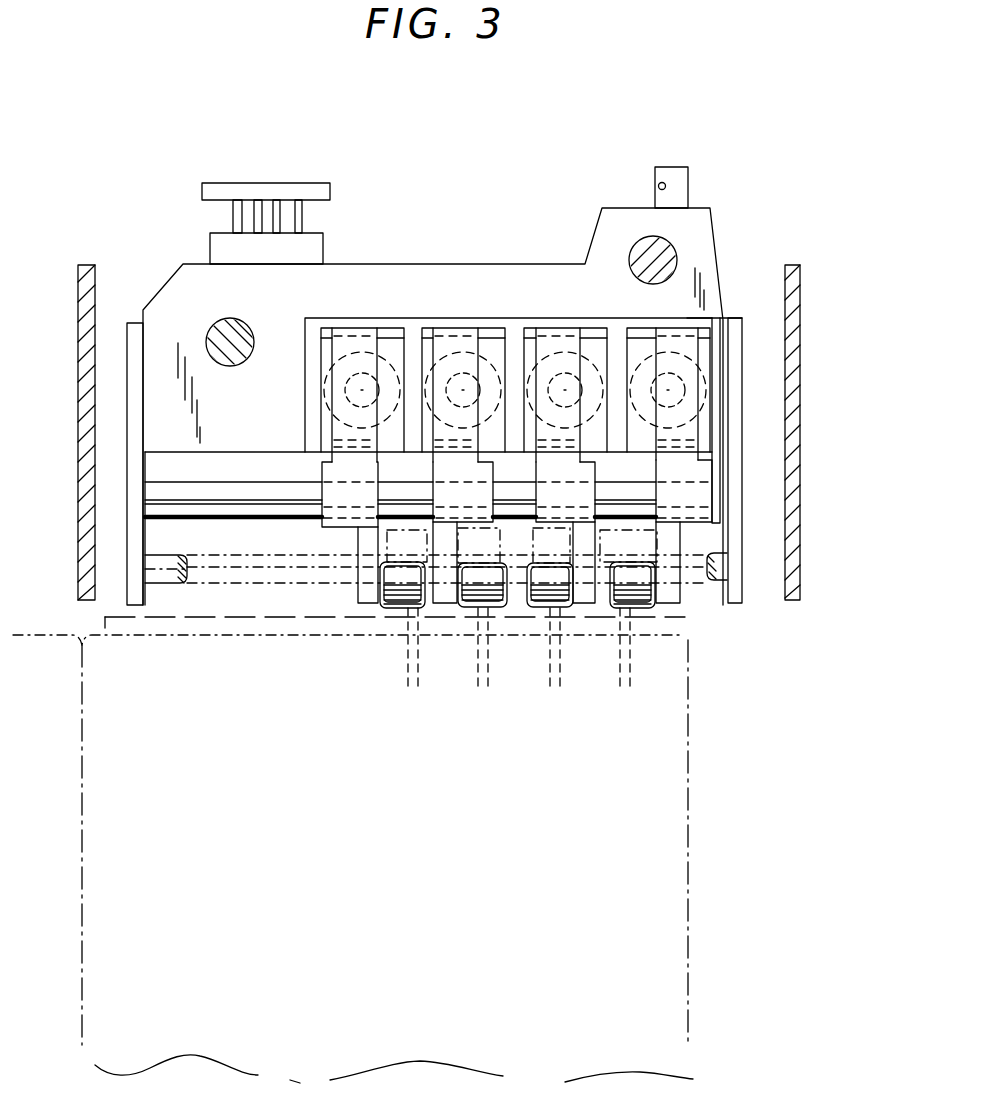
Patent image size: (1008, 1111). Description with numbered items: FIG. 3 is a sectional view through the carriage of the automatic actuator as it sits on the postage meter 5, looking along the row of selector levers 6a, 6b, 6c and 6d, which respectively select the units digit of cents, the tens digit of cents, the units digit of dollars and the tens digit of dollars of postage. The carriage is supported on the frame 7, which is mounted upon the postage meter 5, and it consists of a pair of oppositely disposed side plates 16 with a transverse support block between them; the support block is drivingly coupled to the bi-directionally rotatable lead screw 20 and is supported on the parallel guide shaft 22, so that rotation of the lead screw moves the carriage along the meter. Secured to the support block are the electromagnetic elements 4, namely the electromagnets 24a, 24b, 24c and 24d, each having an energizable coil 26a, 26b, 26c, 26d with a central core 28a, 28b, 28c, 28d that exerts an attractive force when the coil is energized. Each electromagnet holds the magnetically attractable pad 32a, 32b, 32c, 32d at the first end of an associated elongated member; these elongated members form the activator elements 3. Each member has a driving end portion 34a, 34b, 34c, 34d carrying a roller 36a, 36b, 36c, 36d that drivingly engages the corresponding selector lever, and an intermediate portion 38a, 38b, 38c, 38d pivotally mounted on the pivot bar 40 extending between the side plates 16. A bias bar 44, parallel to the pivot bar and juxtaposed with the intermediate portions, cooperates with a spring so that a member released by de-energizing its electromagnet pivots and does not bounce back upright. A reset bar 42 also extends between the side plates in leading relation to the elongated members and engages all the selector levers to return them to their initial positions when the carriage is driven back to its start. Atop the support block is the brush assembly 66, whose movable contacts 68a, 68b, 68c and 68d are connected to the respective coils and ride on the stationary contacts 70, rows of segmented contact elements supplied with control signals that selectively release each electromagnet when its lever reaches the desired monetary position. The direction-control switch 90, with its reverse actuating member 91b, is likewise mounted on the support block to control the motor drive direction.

The activator elements 3 is at (304, 458).
The electromagnetic elements 4 is at (376, 304).
The postage meter 5 is at (212, 677).
The selector lever 6a is at (628, 540).
The selector lever 6b is at (533, 546).
The selector lever 6c is at (482, 548).
The selector lever 6d is at (400, 542).
The frame 7 is at (68, 406).
The side plates 16 is at (135, 323).
The lead screw 20 is at (226, 330).
The guide shaft 22 is at (670, 244).
The electromagnet 24a is at (638, 330).
The electromagnet 24b is at (542, 332).
The electromagnet 24c is at (495, 330).
The electromagnet 24d is at (393, 330).
The electromagnet coil 26a is at (681, 340).
The electromagnet coil 26b is at (518, 353).
The electromagnet coil 26c is at (447, 362).
The electromagnet coil 26d is at (328, 352).
The central core 28a is at (714, 381).
The central core 28b is at (570, 366).
The central core 28c is at (463, 366).
The central core 28d is at (330, 404).
The magnetically attractable pad 32a is at (727, 341).
The magnetically attractable pad 32b is at (584, 390).
The magnetically attractable pad 32c is at (420, 370).
The magnetically attractable pad 32d is at (345, 387).
The driving end portion 34a is at (670, 599).
The driving end portion 34b is at (585, 598).
The driving end portion 34c is at (443, 599).
The driving end portion 34d is at (365, 599).
The roller 36a is at (624, 592).
The roller 36b is at (548, 592).
The roller 36c is at (468, 598).
The roller 36d is at (405, 593).
The intermediate portion 38a is at (678, 482).
The intermediate portion 38b is at (569, 482).
The intermediate portion 38c is at (458, 482).
The intermediate portion 38d is at (343, 483).
The pivot bar 40 is at (198, 498).
The reset bar 42 is at (160, 565).
The bias bar 44 is at (249, 513).
The brush assembly 66 is at (324, 245).
The movable contact 68a is at (300, 214).
The movable contact 68b is at (277, 212).
The movable contact 68c is at (258, 212).
The movable contact 68d is at (232, 209).
The stationary contacts 70 is at (262, 184).
The direction-control switch 90 is at (688, 178).
The reverse actuating member 91b is at (664, 182).